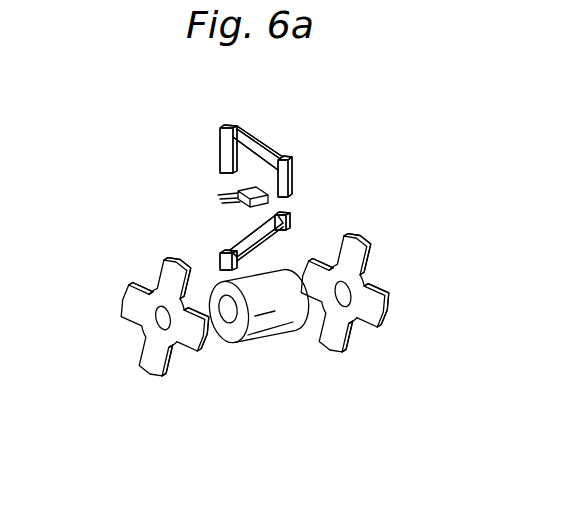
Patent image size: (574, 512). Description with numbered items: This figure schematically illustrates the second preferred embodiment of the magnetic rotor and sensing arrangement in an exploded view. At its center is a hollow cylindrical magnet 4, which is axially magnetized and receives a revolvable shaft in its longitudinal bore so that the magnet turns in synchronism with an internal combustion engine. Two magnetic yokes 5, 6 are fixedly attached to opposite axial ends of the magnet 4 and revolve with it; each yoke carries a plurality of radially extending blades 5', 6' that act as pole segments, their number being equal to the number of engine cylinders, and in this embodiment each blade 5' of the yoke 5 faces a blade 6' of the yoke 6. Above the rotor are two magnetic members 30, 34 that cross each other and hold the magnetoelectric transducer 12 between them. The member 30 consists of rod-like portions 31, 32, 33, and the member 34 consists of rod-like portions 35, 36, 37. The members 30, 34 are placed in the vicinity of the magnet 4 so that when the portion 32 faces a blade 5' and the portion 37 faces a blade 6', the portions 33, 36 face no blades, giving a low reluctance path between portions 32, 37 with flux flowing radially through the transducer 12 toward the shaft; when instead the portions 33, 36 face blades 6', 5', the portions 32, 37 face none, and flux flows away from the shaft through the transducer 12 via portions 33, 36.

The magnetic member 30 is at (255, 130).
The rod-like portion 31 is at (273, 148).
The rod-like portion 32 is at (292, 172).
The rod-like portion 33 is at (220, 140).
The magnetoelectric transducer 12 is at (252, 188).
The magnetic member 34 is at (245, 235).
The rod-like portion 35 is at (257, 225).
The rod-like portion 36 is at (290, 227).
The rod-like portion 37 is at (220, 265).
The hollow cylindrical magnet 4 is at (247, 340).
The magnetic yoke 5 is at (345, 309).
The blades 5' is at (369, 281).
The magnetic yoke 6 is at (165, 335).
The blades 6' is at (152, 333).